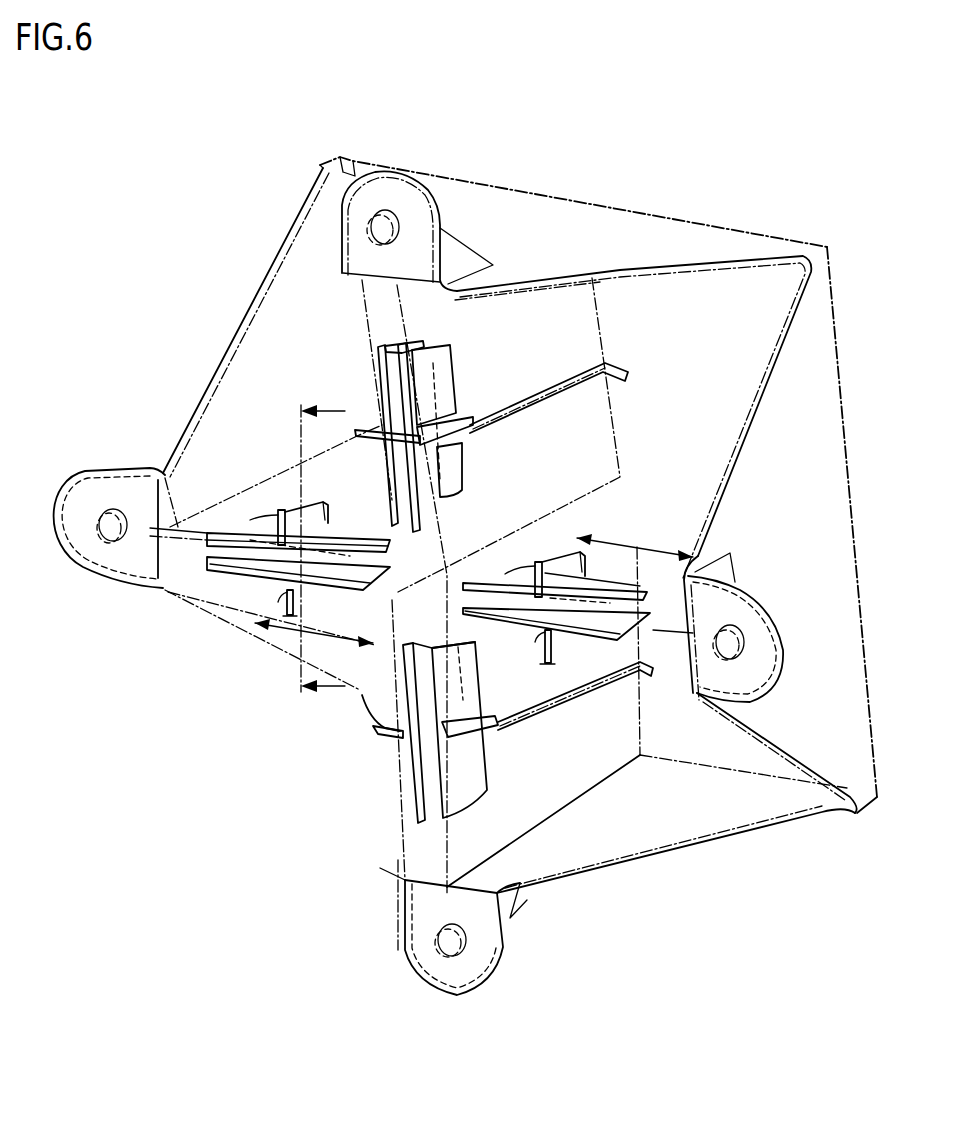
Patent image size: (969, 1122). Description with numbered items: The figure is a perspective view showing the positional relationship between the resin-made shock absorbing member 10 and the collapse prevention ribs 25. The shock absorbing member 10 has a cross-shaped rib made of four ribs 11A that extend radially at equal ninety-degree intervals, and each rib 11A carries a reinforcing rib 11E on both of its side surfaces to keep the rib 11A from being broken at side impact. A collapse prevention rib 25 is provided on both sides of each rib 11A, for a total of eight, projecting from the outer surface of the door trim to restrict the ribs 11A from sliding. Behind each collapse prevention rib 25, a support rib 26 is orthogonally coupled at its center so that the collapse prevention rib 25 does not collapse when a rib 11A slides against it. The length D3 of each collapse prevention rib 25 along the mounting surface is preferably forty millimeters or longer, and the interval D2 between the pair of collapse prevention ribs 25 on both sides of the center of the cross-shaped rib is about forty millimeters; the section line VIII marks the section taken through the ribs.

The resin-made shock absorbing member 10 is at (470, 143).
The rib 11A is at (383, 302).
The reinforcing rib 11E is at (552, 408).
The collapse prevention rib 25 is at (374, 356).
The support rib 26 is at (372, 428).
The interval D2 is at (287, 630).
The length D3 is at (697, 553).
The section line VIII is at (316, 552).